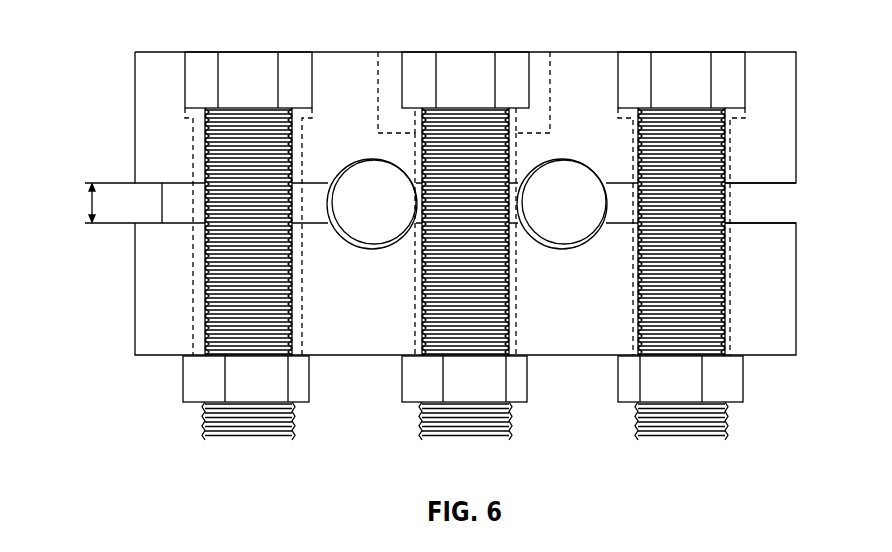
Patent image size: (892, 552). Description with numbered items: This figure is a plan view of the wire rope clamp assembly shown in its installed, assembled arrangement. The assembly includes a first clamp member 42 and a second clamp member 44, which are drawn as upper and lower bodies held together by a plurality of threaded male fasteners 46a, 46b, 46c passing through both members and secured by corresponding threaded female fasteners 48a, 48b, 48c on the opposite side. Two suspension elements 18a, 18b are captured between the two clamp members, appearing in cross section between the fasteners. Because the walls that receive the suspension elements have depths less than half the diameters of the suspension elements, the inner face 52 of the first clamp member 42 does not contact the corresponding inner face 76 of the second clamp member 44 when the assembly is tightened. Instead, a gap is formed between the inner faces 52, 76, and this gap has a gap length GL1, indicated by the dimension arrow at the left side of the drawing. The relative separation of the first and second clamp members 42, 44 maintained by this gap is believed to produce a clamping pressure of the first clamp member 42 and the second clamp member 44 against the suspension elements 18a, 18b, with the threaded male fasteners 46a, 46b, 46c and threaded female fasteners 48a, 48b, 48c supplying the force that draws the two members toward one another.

The first clamp member 42 is at (797, 123).
The second clamp member 44 is at (797, 290).
The inner face of the first clamp member 52 is at (776, 184).
The inner face of the second clamp member 76 is at (776, 223).
The gap length GL1 is at (86, 205).
The threaded male fastener 46a is at (750, 52).
The threaded male fastener 46b is at (250, 52).
The threaded male fastener 46c is at (467, 52).
The threaded female fastener 48a is at (745, 378).
The threaded female fastener 48b is at (312, 378).
The threaded female fastener 48c is at (528, 378).
The suspension element 18a is at (323, 183).
The suspension element 18b is at (605, 196).